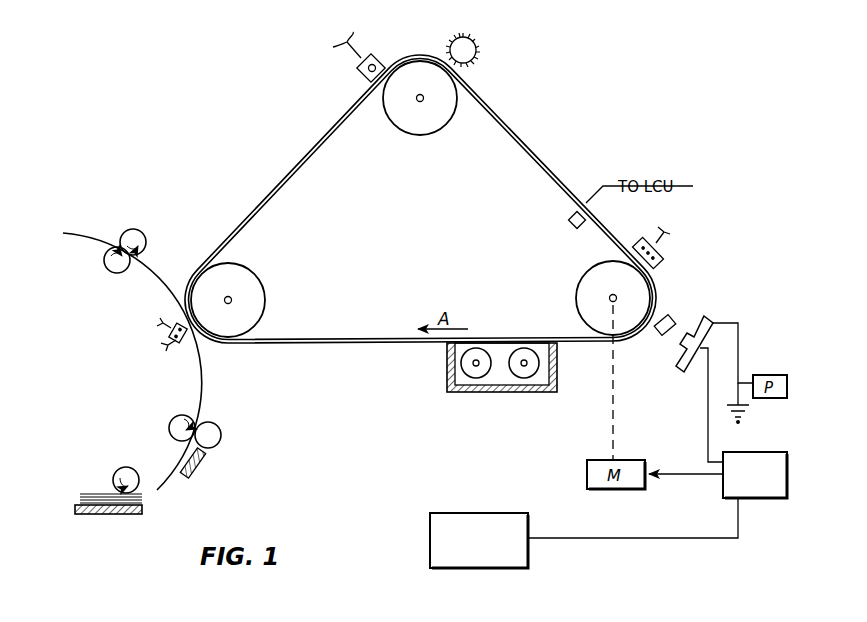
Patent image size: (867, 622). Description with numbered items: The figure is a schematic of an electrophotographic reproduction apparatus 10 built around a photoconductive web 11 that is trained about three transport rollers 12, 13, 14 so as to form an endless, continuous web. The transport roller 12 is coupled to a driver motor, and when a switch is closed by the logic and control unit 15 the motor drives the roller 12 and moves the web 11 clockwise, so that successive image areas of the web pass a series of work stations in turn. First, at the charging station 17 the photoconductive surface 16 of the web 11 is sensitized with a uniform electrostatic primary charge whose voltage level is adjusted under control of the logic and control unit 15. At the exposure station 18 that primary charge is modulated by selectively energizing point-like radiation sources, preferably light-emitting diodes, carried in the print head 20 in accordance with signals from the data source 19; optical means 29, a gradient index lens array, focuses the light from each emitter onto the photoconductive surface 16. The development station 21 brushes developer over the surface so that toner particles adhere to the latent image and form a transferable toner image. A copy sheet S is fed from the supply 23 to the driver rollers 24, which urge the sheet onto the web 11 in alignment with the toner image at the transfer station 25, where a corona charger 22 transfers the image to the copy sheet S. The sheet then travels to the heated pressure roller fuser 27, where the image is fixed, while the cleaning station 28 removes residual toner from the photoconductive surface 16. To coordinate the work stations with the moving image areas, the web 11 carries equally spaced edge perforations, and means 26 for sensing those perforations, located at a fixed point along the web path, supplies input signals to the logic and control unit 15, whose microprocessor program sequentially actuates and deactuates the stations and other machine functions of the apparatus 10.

The electrophotographic reproduction apparatus 10 is at (256, 86).
The photoconductive web 11 is at (236, 223).
The transport roller 12 is at (582, 278).
The transport roller 13 is at (408, 134).
The transport roller 14 is at (263, 284).
The logic and control unit 15 is at (721, 498).
The photoconductive surface 16 is at (561, 177).
The charging station 17 is at (670, 252).
The exposure station 18 is at (689, 313).
The data source 19 is at (469, 513).
The print head 20 is at (677, 371).
The development station 21 is at (452, 392).
The corona charger 22 is at (173, 353).
The supply 23 is at (106, 515).
The driver rollers 24 is at (169, 430).
The transfer station 25 is at (95, 437).
The means for sensing web perforations 26 is at (570, 221).
The heated pressure roller fuser 27 is at (97, 250).
The cleaning station 28 is at (469, 36).
The optical means 29 is at (661, 336).
The copy sheet S is at (160, 283).